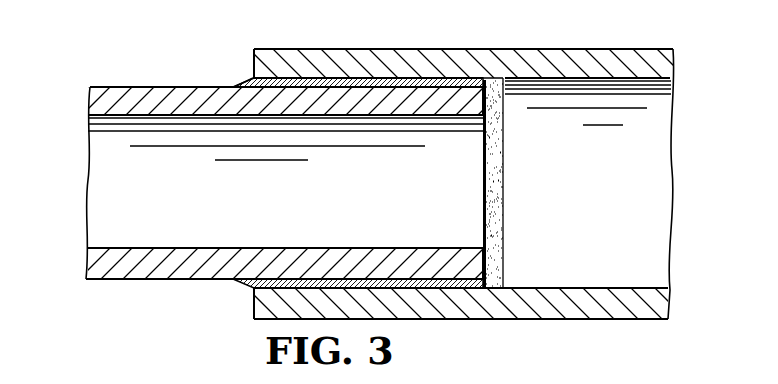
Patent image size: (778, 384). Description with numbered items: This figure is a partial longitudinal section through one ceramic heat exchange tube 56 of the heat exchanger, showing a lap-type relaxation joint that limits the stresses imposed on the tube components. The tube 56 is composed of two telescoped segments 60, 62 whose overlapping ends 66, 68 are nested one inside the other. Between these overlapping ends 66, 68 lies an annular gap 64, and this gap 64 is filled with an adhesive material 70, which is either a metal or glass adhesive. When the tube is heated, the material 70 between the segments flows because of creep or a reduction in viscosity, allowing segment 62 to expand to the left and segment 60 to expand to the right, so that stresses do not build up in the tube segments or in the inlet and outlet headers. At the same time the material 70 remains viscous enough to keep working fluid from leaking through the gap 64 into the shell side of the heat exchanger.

The ceramic heat exchange tube 56 is at (501, 45).
The tube segment 60 is at (654, 47).
The tube segment 62 is at (113, 83).
The annular gap 64 is at (321, 81).
The overlapping end 66 is at (432, 49).
The overlapping end 68 is at (441, 120).
The adhesive material 70 is at (241, 84).